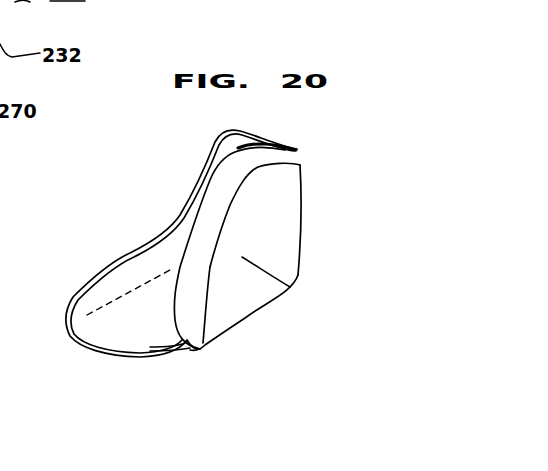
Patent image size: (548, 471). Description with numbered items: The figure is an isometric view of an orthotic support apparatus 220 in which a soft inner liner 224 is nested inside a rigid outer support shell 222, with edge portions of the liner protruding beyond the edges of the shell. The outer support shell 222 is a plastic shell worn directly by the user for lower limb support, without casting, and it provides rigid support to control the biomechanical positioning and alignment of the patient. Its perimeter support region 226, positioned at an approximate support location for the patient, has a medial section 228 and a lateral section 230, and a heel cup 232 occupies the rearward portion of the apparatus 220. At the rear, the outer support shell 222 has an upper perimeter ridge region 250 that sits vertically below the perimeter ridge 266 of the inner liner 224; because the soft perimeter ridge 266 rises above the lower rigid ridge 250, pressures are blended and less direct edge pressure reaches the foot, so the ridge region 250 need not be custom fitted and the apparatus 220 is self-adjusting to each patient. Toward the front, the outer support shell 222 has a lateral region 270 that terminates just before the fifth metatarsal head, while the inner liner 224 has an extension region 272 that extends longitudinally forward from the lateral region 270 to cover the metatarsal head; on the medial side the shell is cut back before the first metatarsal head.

The apparatus 220 is at (147, 184).
The outer support shell 222 is at (289, 200).
The inner liner 224 is at (284, 154).
The perimeter support region 226 is at (250, 243).
The medial section 228 is at (140, 243).
The lateral section 230 is at (290, 287).
The heel cup 232 is at (297, 267).
The rearward upper perimeter ridge region 250 is at (302, 170).
The perimeter ridge 266 is at (274, 148).
The lateral region 270 is at (220, 328).
The extension region 272 is at (190, 330).